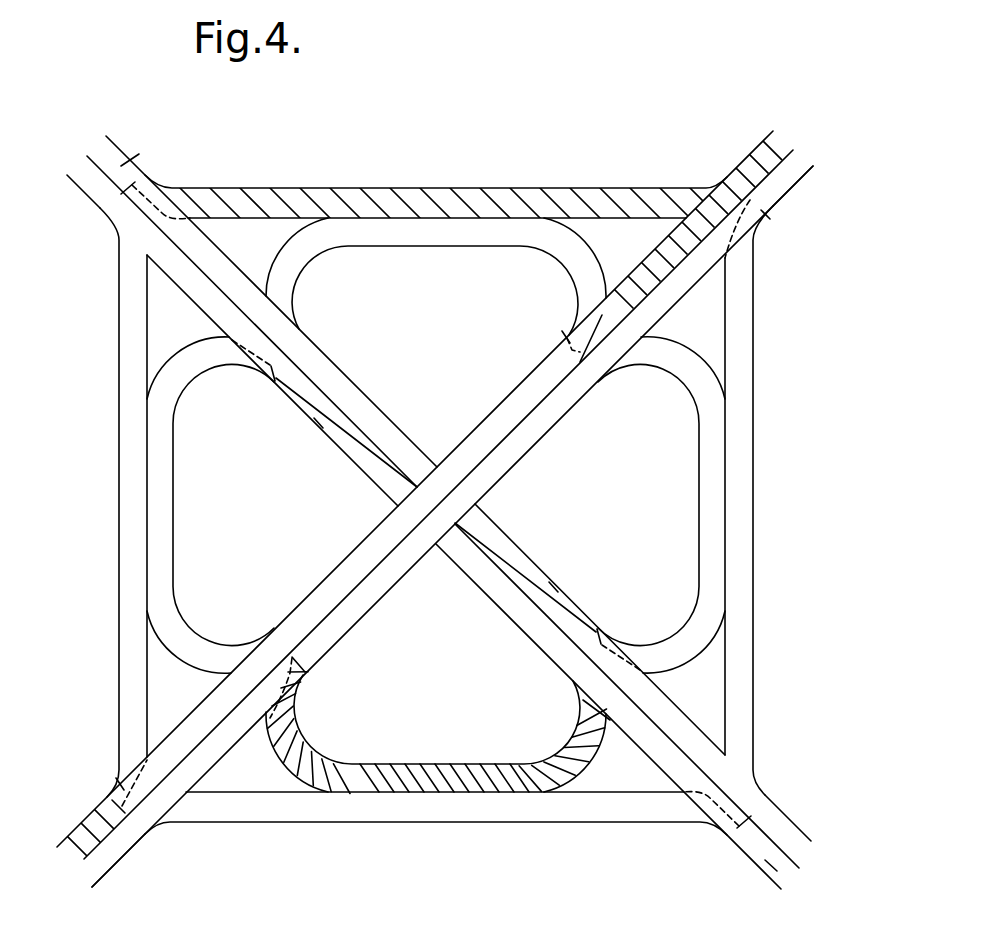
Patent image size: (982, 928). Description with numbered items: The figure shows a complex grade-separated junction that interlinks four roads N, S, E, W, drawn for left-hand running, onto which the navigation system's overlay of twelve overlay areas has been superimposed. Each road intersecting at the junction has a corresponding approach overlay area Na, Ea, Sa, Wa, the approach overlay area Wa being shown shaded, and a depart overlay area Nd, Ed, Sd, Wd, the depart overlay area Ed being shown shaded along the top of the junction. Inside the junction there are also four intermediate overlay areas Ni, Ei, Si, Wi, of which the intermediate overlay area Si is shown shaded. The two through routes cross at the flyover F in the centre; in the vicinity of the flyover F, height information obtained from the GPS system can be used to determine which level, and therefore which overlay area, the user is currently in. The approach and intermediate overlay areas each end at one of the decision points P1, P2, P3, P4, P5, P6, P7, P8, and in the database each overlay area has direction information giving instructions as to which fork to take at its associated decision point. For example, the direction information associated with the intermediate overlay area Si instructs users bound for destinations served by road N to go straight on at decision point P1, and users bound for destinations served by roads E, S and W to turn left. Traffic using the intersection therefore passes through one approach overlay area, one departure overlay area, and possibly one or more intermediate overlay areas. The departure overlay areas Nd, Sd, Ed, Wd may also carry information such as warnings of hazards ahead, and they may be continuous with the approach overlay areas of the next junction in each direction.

The depart overlay area Ed is at (465, 197).
The depart overlay area Nd is at (122, 494).
The depart overlay area Sd is at (758, 494).
The depart overlay area Wd is at (382, 828).
The road N is at (248, 307).
The road S is at (628, 710).
The road E is at (793, 166).
The road W is at (96, 864).
The flyover F is at (484, 504).
The approach overlay area Na is at (134, 157).
The approach overlay area Ea is at (788, 181).
The approach overlay area Wa is at (87, 821).
The approach overlay area Sa is at (773, 862).
The intermediate overlay area Ni is at (375, 390).
The intermediate overlay area Si is at (506, 610).
The intermediate overlay area Wi is at (175, 502).
The intermediate overlay area Ei is at (700, 486).
The decision point P1 is at (318, 423).
The decision point P2 is at (740, 828).
The decision point P3 is at (118, 779).
The decision point P4 is at (148, 177).
The decision point P5 is at (767, 216).
The decision point P6 is at (565, 337).
The decision point P7 is at (606, 642).
The decision point P8 is at (308, 664).